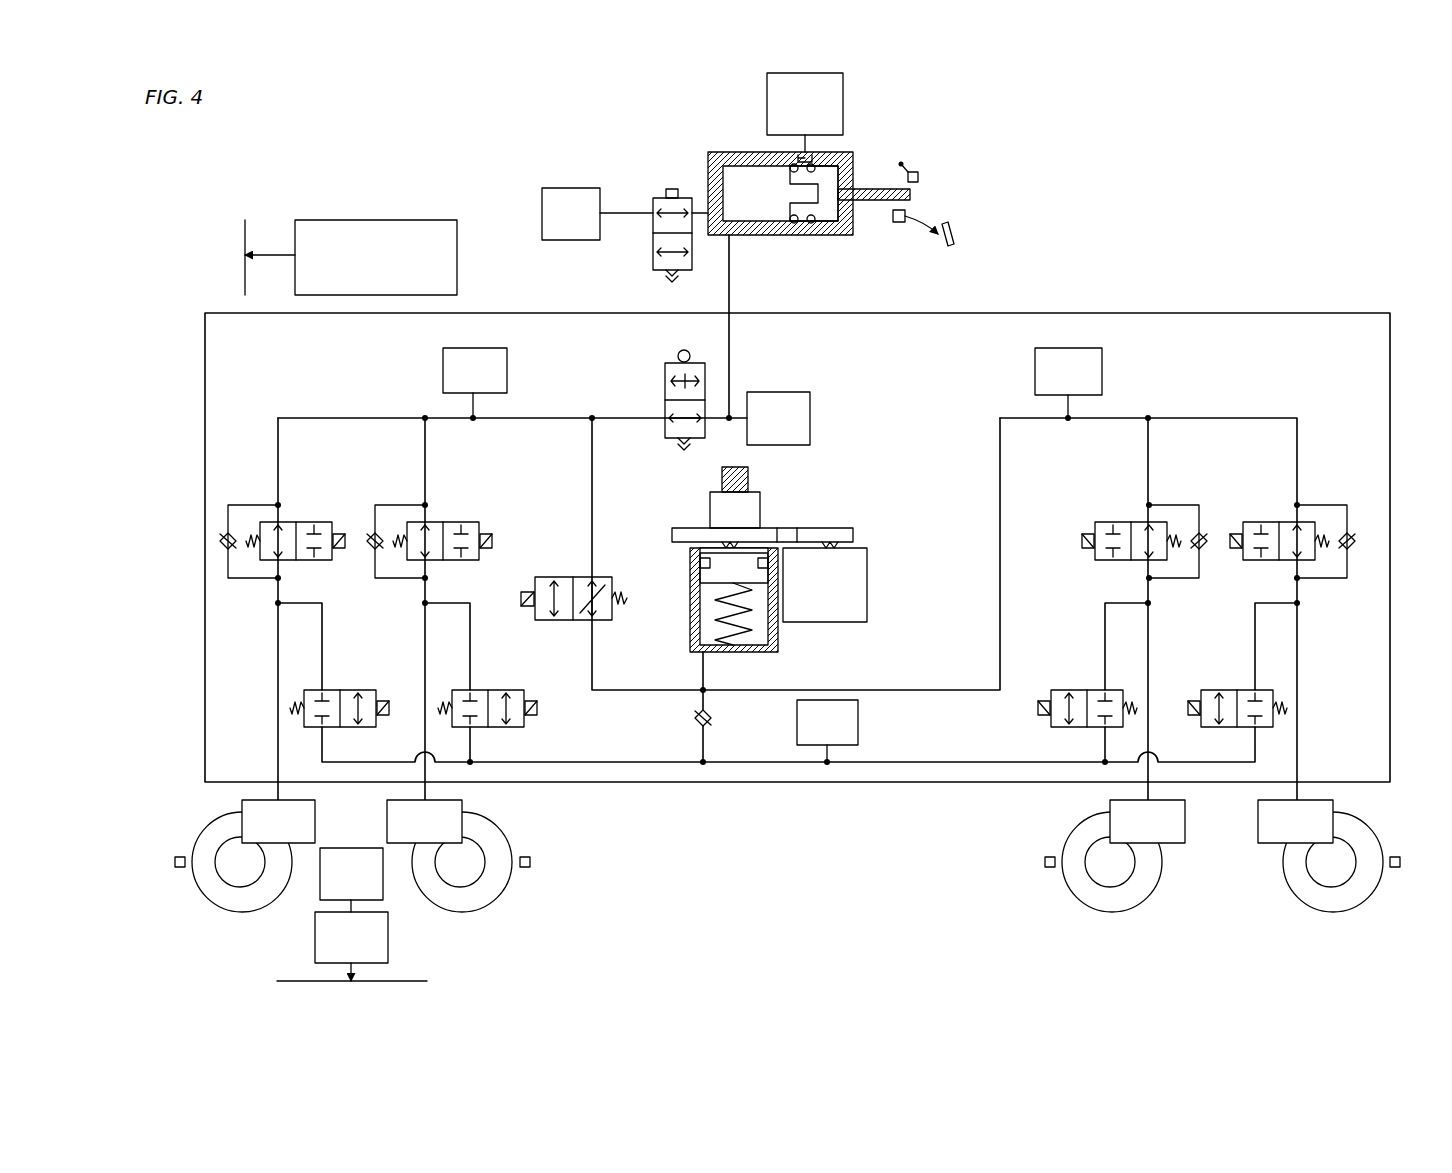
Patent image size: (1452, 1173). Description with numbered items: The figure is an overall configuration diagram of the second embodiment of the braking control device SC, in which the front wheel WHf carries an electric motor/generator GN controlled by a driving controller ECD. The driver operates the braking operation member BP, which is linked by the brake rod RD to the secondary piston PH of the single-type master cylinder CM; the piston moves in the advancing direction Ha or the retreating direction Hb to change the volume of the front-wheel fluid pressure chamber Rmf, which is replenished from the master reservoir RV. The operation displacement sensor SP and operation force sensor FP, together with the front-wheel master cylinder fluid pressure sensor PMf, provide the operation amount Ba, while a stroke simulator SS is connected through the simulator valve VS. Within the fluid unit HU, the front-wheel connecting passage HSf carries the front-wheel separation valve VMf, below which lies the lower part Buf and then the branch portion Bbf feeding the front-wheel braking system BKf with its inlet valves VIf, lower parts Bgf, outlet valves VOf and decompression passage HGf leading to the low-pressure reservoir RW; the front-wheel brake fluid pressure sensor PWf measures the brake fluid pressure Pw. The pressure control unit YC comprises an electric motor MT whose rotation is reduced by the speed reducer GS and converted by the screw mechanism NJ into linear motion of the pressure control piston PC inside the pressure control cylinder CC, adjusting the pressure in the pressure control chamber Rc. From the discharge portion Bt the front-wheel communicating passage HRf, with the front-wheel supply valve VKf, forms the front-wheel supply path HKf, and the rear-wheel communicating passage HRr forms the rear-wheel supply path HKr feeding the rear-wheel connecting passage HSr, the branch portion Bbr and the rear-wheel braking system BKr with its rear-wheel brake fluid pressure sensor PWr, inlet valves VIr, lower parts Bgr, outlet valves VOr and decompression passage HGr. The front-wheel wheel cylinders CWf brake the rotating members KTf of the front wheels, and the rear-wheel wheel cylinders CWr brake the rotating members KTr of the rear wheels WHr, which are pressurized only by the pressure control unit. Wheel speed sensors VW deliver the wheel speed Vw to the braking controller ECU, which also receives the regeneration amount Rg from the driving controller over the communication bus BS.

The fluid unit HU is at (560, 313).
The braking control device SC is at (1213, 278).
The braking controller ECU is at (376, 257).
The operation amount Ba is at (332, 220).
The brake fluid pressure Pw is at (363, 220).
The wheel speed Vw is at (390, 220).
The regeneration amount Rg is at (418, 220).
The communication bus BS is at (316, 600).
The master reservoir RV is at (805, 112).
The advancing direction Ha is at (706, 88).
The retreating direction Hb is at (725, 89).
The master cylinder CM is at (748, 153).
The front-wheel fluid pressure chamber Rmf is at (754, 195).
The secondary piston PH is at (823, 235).
The brake rod RD is at (880, 202).
The operation displacement sensor SP is at (918, 172).
The operation force sensor FP is at (899, 224).
The braking operation member BP is at (948, 230).
The stroke simulator SS is at (597, 214).
The simulator valve VS is at (668, 193).
The front-wheel connecting passage HSf is at (730, 262).
The front-wheel braking system BKf is at (350, 388).
The front-wheel brake fluid pressure sensor PWf is at (475, 384).
The front-wheel branch portion Bbf is at (425, 417).
The lower part of front-wheel separation valve Buf is at (592, 417).
The front-wheel supply path HKf is at (455, 420).
The front-wheel communicating passage HRf is at (593, 445).
The front-wheel separation valve VMf is at (675, 356).
The front-wheel master cylinder fluid pressure sensor PMf is at (778, 418).
The front-wheel inlet valve VIf is at (283, 521).
The lower part of front-wheel inlet valve Bgf is at (270, 610).
The front-wheel outlet valve VOf is at (326, 688).
The front-wheel decompression passage HGf is at (555, 762).
The rear-wheel decompression passage HGr is at (890, 762).
The front-wheel supply valve VKf is at (578, 577).
The rotation/linear motion conversion mechanism NJ is at (748, 473).
The speed reducer GS is at (780, 527).
The electric motor MT is at (825, 585).
The pressure control unit YC is at (878, 585).
The pressure control cylinder CC is at (690, 636).
The pressure control piston PC is at (700, 576).
The pressure control chamber Rc is at (775, 648).
The discharge portion Bt is at (710, 656).
The low-pressure reservoir RW is at (827, 732).
The rear-wheel braking system BKr is at (1225, 388).
The rear-wheel brake fluid pressure sensor PWr is at (1068, 384).
The rear-wheel connecting passage HSr is at (1238, 417).
The rear-wheel branch portion Bbr is at (1148, 417).
The rear-wheel communicating passage HRr is at (1000, 478).
The rear-wheel supply path HKr is at (959, 529).
The rear-wheel inlet valve VIr is at (1143, 521).
The lower part of rear-wheel inlet valve Bgr is at (1152, 606).
The rear-wheel outlet valve VOr is at (1098, 688).
The front wheel WHf is at (206, 826).
The front-wheel wheel cylinder CWf is at (352, 821).
The front-wheel rotating member KTf is at (228, 886).
The wheel speed sensor VW is at (180, 867).
The electric motor/generator GN is at (351, 880).
The driving controller ECD is at (351, 937).
The rear wheel WHr is at (1071, 826).
The rear-wheel wheel cylinder CWr is at (1221, 821).
The rear-wheel rotating member KTr is at (1100, 886).